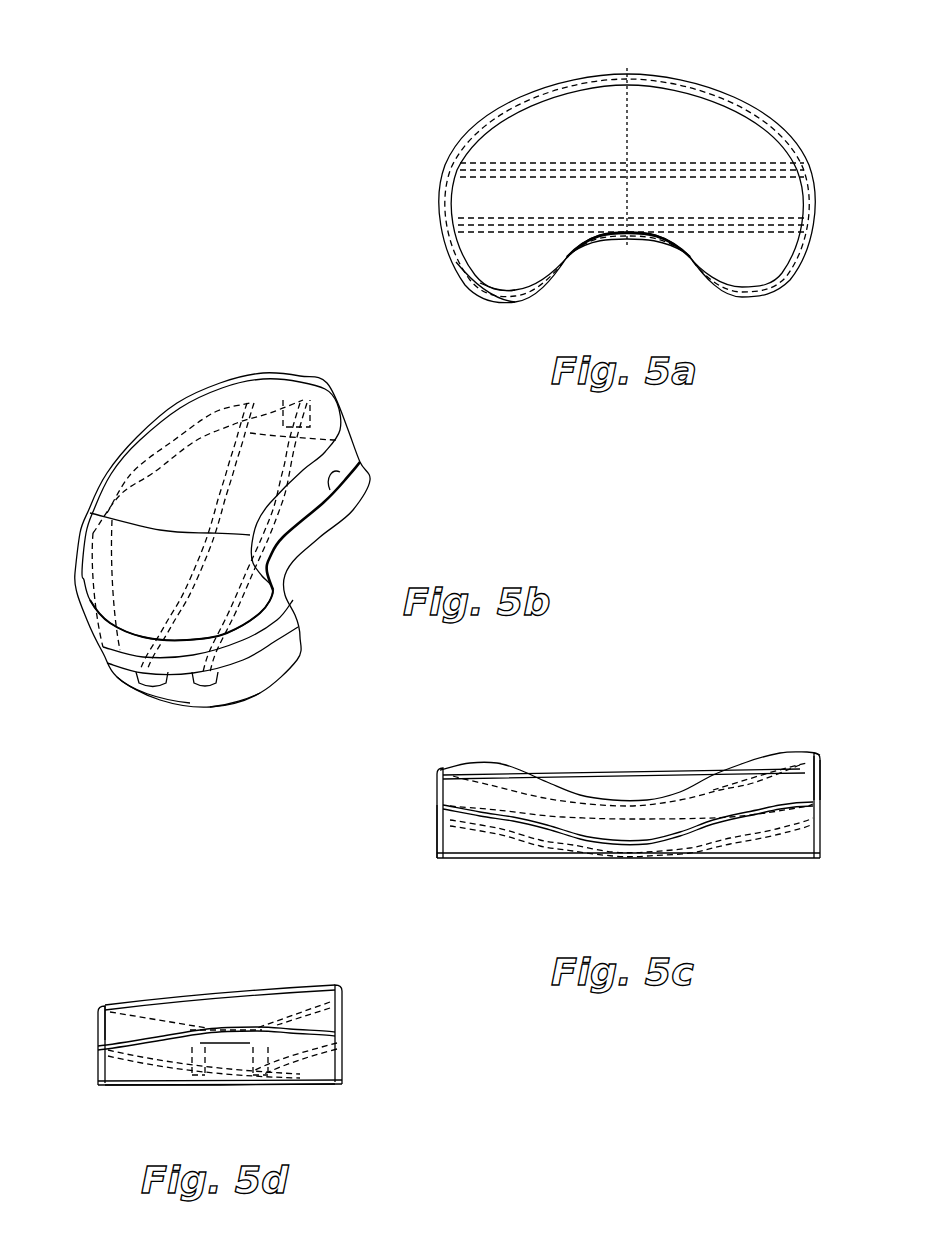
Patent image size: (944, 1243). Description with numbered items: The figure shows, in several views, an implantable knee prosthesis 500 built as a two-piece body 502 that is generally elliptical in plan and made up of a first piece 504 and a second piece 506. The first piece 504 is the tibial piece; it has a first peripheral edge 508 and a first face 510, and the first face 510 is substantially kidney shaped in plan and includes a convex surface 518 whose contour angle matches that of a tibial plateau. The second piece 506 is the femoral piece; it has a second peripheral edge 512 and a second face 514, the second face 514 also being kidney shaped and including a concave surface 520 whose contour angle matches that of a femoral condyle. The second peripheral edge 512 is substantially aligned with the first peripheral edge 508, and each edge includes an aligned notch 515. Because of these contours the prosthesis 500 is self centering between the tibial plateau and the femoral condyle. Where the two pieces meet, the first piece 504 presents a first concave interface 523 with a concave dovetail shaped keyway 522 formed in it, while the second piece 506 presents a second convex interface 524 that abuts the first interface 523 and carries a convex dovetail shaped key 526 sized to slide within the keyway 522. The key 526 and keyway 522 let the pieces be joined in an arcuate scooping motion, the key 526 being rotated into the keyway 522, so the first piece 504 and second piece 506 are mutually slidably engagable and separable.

In FIG. 5A, the implantable knee prosthesis 500 is at (723, 70).
In FIG. 5B, the implantable knee prosthesis 500 is at (167, 383).
In FIG. 5C, the implantable knee prosthesis 500 is at (768, 700).
In FIG. 5D, the implantable knee prosthesis 500 is at (143, 947).
In FIG. 5A, the two-piece body 502 is at (615, 72).
In FIG. 5B, the two-piece body 502 is at (274, 371).
In FIG. 5C, the two-piece body 502 is at (440, 770).
In FIG. 5D, the two-piece body 502 is at (336, 986).
In FIG. 5B, the first piece 504 is at (250, 692).
In FIG. 5C, the first piece 504 is at (436, 860).
In FIG. 5D, the first piece 504 is at (100, 1085).
In FIG. 5A, the second piece 506 is at (456, 262).
In FIG. 5B, the second piece 506 is at (278, 586).
In FIG. 5C, the second piece 506 is at (815, 755).
In FIG. 5D, the second piece 506 is at (101, 1005).
In FIG. 5B, the first peripheral edge 508 is at (230, 690).
In FIG. 5C, the first peripheral edge 508 is at (436, 836).
In FIG. 5C, the first face 510 is at (651, 860).
In FIG. 5D, the first face 510 is at (140, 1086).
In FIG. 5B, the second peripheral edge 512 is at (297, 620).
In FIG. 5C, the second peripheral edge 512 is at (822, 778).
In FIG. 5A, the second face 514 is at (480, 283).
In FIG. 5B, the second face 514 is at (222, 380).
In FIG. 5C, the second face 514 is at (683, 768).
In FIG. 5D, the second face 514 is at (287, 985).
In FIG. 5A, the aligned notch 515 is at (641, 240).
In FIG. 5B, the aligned notch 515 is at (272, 536).
In FIG. 5C, the convex surface 518 is at (587, 860).
In FIG. 5D, the convex surface 518 is at (232, 1086).
In FIG. 5C, the concave surface 520 is at (530, 788).
In FIG. 5D, the concave surface 520 is at (176, 1016).
In FIG. 5A, the concave dovetail shaped keyway 522 is at (787, 242).
In FIG. 5B, the concave dovetail shaped keyway 522 is at (364, 462).
In FIG. 5D, the concave dovetail shaped keyway 522 is at (262, 1036).
In FIG. 5B, the first concave interface 523 is at (335, 475).
In FIG. 5D, the first concave interface 523 is at (335, 1030).
In FIG. 5B, the second convex interface 524 is at (297, 645).
In FIG. 5D, the second convex interface 524 is at (118, 1046).
In FIG. 5A, the convex dovetail shaped key 526 is at (733, 232).
In FIG. 5B, the convex dovetail shaped key 526 is at (164, 672).
In FIG. 5D, the convex dovetail shaped key 526 is at (228, 1036).